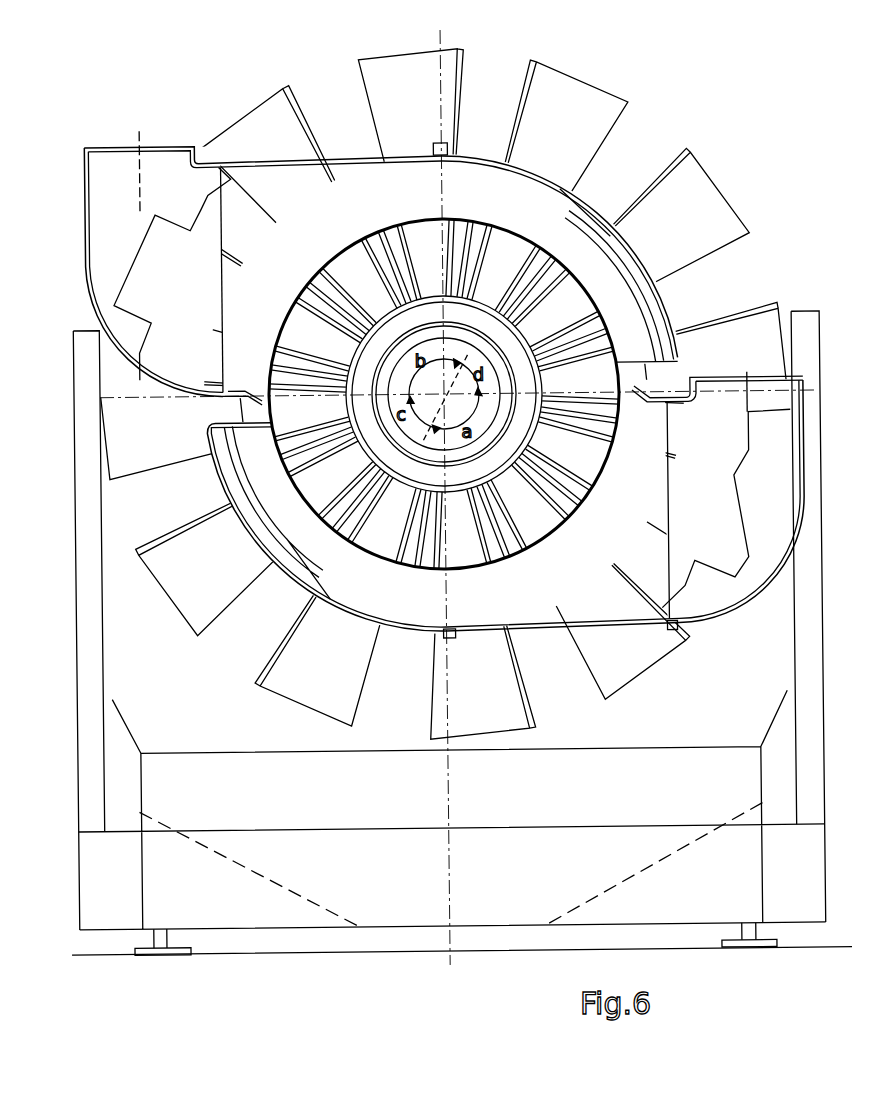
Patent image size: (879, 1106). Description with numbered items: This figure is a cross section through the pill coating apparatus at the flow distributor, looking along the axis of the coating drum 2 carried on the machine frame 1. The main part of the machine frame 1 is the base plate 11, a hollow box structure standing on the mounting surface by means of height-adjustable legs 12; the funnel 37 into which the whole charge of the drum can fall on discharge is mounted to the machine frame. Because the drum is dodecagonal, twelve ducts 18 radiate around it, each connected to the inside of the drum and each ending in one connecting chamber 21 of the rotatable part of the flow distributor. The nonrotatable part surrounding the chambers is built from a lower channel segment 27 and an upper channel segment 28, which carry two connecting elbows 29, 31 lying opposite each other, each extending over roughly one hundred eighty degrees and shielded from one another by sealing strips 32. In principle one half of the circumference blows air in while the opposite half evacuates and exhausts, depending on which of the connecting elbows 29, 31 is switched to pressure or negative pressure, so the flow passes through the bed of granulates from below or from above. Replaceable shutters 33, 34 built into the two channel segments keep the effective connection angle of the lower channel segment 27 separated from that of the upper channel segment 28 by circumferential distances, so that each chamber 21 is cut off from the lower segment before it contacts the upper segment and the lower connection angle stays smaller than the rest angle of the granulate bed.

The machine frame 1 is at (79, 318).
The coating drum 2 is at (498, 74).
The base plate 11 is at (189, 897).
The height-adjustable legs 12 is at (161, 940).
The ducts 18 is at (700, 147).
The connecting chamber 21 is at (352, 258).
The lower channel segment 27 is at (560, 592).
The upper channel segment 28 is at (502, 203).
The connecting elbow 29 is at (718, 494).
The connecting elbow 31 is at (183, 292).
The sealing strips 32 is at (258, 398).
The replaceable shutter 33 is at (263, 501).
The replaceable shutter 34 is at (642, 292).
The funnel 37 is at (278, 884).